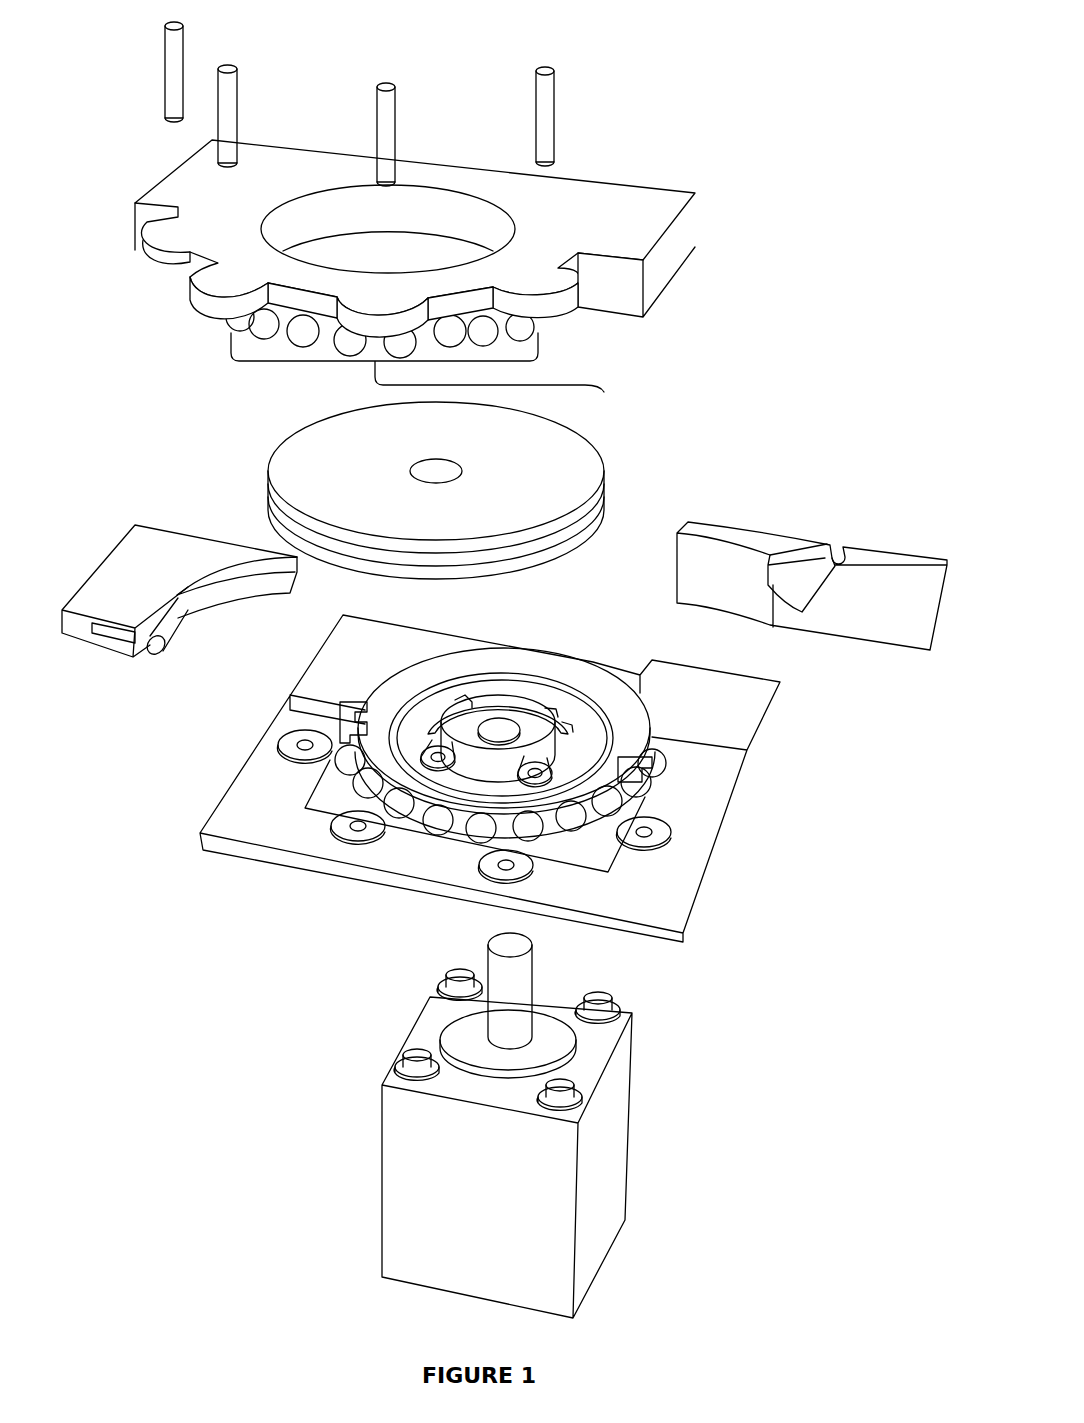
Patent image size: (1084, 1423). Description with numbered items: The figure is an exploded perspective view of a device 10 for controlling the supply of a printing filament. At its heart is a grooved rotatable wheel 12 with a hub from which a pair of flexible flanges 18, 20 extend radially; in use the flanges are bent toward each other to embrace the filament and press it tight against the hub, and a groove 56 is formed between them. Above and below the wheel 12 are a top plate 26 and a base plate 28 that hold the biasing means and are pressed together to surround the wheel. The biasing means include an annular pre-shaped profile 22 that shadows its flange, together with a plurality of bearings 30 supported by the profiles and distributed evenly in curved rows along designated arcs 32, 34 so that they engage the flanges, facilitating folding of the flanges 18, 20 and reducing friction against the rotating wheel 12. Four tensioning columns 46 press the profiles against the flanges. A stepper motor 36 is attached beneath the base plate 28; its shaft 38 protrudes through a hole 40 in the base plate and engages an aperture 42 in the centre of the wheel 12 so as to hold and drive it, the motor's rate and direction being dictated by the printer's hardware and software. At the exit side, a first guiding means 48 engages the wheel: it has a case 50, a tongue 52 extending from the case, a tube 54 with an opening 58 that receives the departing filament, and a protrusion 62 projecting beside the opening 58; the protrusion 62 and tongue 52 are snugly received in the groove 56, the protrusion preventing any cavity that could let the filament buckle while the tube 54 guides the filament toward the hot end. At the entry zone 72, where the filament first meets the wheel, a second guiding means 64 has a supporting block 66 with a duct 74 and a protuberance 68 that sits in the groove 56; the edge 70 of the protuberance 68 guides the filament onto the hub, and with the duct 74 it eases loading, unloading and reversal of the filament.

The device for controlling supply of a filament 10 is at (794, 336).
The grooved rotatable wheel 12 is at (578, 452).
The flexible flange 18 is at (598, 512).
The flexible flange 20 is at (585, 540).
The pre-shaped profile 22 is at (616, 748).
The top plate 26 is at (656, 205).
The base plate 28 is at (680, 878).
The bearings 30 is at (303, 334).
The designated arc 32 is at (472, 840).
The designated arc 34 is at (431, 371).
The stepper motor 36 is at (598, 1138).
The shaft 38 is at (522, 978).
The hole 40 is at (508, 722).
The aperture 42 is at (423, 467).
The tensioning columns 46 is at (540, 90).
The first guiding means 48 is at (118, 672).
The case 50 is at (118, 575).
The tongue 52 is at (220, 583).
The tube 54 is at (170, 615).
The groove 56 is at (477, 558).
The opening 58 is at (152, 652).
The protrusion 62 is at (113, 630).
The second guiding means 64 is at (786, 510).
The supporting block 66 is at (897, 593).
The protuberance 68 is at (805, 577).
The edge 70 is at (817, 580).
The entry zone 72 is at (668, 713).
The duct 74 is at (842, 548).